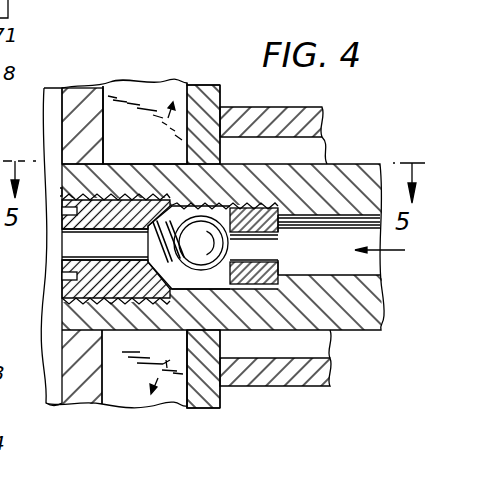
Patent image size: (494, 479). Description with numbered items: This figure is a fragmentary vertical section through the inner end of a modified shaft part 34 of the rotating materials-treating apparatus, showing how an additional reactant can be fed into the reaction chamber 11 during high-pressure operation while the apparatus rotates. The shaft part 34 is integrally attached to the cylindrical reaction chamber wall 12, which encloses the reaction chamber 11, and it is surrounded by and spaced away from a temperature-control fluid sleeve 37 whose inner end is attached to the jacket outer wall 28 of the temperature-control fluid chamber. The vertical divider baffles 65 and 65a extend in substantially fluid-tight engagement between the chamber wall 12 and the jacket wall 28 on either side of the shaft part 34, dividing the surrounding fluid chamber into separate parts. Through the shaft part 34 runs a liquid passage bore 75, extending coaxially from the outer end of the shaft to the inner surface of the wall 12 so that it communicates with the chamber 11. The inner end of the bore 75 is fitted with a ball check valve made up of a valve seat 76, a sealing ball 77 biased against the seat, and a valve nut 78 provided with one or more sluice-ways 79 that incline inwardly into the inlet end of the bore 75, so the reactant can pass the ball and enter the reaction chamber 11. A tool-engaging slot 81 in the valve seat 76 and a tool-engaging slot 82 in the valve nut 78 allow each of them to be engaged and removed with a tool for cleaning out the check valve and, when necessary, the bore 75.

The reaction chamber 11 is at (50, 292).
The reaction chamber wall 12 is at (85, 93).
The vertical divider baffle 65 is at (153, 93).
The temperature-control fluid chamber outer wall 28 is at (205, 93).
The temperature-control fluid sleeve 37 is at (317, 105).
The shaft part 34 is at (332, 183).
The sluice-way 79 is at (150, 222).
The valve nut 78 is at (133, 286).
The sealing ball 77 is at (202, 227).
The tool-engaging slot 81 is at (265, 207).
The valve seat 76 is at (192, 347).
The liquid passage bore 75 is at (360, 275).
The vertical divider baffle 65a is at (123, 395).
The tool-engaging slot 82 is at (60, 192).